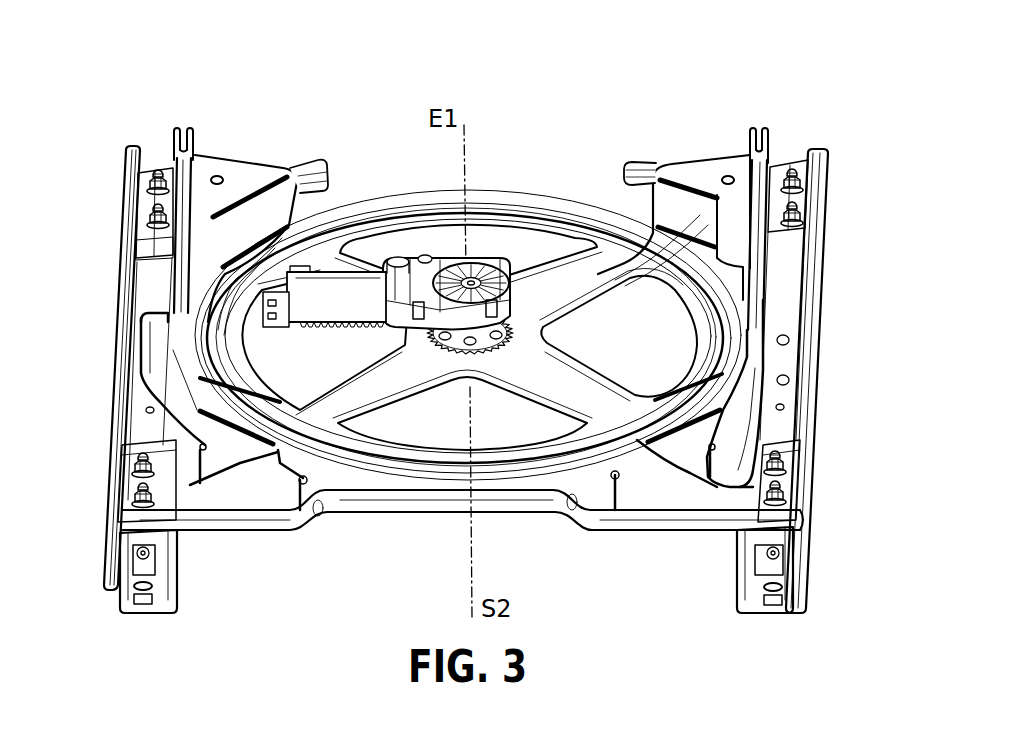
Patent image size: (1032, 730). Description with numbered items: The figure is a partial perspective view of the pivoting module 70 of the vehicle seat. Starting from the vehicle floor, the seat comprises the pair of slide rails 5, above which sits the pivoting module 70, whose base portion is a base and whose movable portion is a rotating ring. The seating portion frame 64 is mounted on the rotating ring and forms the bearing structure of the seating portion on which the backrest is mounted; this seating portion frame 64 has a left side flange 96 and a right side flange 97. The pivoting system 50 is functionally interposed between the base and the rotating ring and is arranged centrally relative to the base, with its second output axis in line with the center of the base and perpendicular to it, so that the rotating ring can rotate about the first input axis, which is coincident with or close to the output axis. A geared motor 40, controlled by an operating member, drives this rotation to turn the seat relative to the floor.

The slide rails 5 is at (517, 203).
The geared motor 40 is at (334, 344).
The pivoting system 50 is at (513, 313).
The seating portion frame 64 is at (180, 108).
The pivoting module 70 is at (407, 162).
The left side flange 96 is at (763, 277).
The right side flange 97 is at (140, 378).